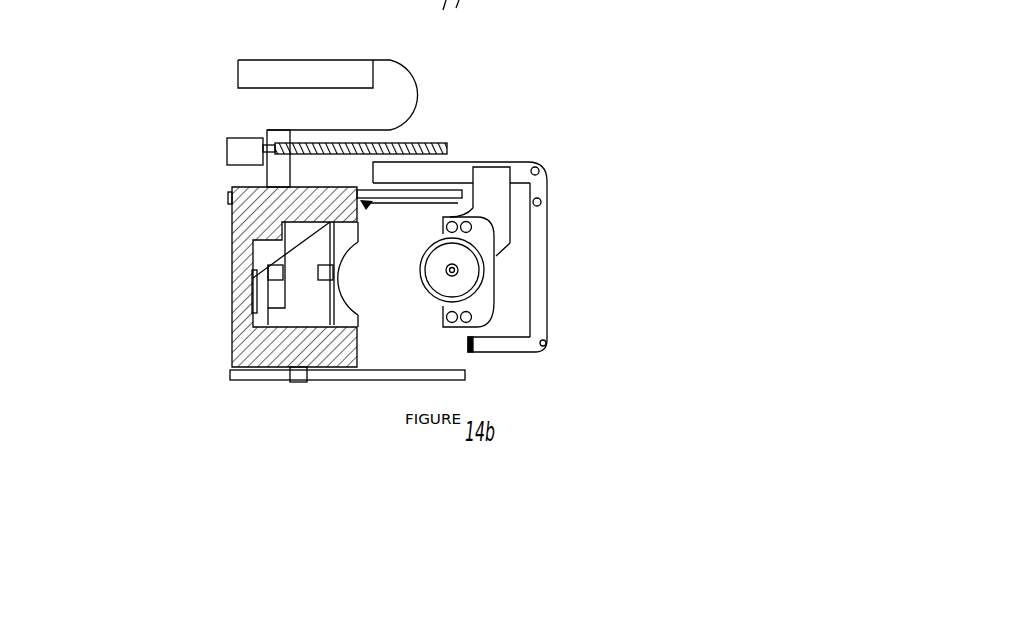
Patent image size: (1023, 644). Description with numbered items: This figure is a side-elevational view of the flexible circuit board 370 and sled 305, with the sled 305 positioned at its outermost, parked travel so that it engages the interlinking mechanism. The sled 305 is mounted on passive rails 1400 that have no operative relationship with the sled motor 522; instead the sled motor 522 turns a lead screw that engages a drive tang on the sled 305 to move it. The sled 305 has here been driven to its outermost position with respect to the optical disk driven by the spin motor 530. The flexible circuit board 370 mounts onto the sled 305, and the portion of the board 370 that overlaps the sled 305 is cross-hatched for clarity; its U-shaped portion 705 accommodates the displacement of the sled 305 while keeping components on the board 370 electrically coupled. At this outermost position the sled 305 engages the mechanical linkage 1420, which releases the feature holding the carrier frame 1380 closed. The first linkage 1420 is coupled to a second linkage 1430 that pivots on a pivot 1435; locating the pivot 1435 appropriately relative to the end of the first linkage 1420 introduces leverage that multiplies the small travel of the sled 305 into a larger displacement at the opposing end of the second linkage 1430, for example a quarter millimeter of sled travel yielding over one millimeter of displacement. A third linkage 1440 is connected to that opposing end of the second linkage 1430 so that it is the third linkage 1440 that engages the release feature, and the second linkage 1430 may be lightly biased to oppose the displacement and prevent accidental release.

The sled 305 is at (262, 249).
The flexible circuit board 370 is at (362, 337).
The lead screw motor 522 is at (226, 137).
The spin motor 530 is at (435, 263).
The U-shaped portion 705 is at (290, 138).
The carrier frame 1380 is at (671, 303).
The passive rails 1400 is at (247, 373).
The mechanical linkage 1420 is at (468, 158).
The second linkage 1430 is at (548, 248).
The pivot 1435 is at (541, 197).
The third linkage 1440 is at (472, 352).